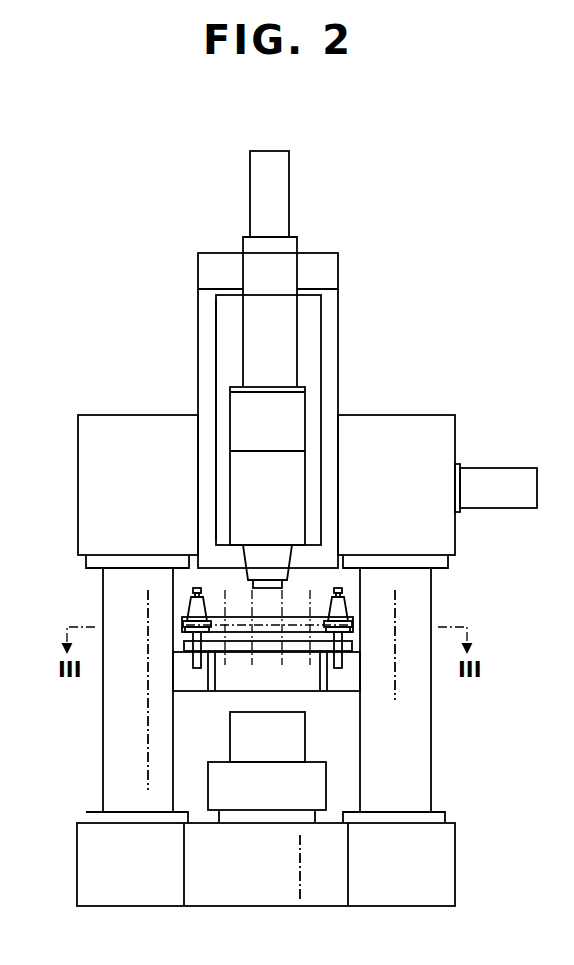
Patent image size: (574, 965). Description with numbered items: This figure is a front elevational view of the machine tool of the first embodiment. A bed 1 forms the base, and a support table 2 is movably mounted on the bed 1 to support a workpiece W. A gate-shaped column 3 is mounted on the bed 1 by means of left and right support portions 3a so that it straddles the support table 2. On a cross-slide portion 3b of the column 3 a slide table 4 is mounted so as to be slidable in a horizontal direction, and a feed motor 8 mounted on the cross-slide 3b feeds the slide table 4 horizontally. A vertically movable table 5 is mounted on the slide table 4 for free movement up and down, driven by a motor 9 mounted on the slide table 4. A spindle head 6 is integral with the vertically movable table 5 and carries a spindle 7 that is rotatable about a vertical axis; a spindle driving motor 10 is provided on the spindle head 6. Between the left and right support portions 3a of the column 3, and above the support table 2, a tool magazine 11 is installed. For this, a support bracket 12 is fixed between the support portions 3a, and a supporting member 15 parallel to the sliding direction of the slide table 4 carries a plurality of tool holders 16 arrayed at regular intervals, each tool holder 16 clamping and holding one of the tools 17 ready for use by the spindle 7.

The bed 1 is at (445, 862).
The support table 2 is at (318, 792).
The gate-shaped column 3 is at (87, 447).
The support portions 3a is at (425, 598).
The cross-slide portion 3b is at (420, 428).
The slide table 4 is at (335, 340).
The vertically movable table 5 is at (219, 337).
The spindle head 6 is at (298, 473).
The spindle 7 is at (250, 585).
The feed motor 8 is at (510, 468).
The motor 9 is at (285, 207).
The spindle driving motor 10 is at (250, 252).
The tool magazine 11 is at (188, 605).
The support bracket 12 is at (345, 648).
The supporting member 15 is at (350, 633).
The tool holders 16 is at (183, 628).
The tools 17 is at (190, 608).
The workpiece W is at (300, 737).